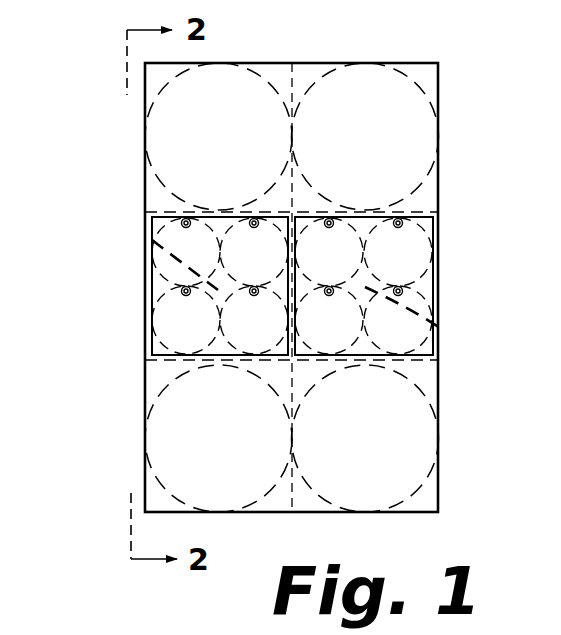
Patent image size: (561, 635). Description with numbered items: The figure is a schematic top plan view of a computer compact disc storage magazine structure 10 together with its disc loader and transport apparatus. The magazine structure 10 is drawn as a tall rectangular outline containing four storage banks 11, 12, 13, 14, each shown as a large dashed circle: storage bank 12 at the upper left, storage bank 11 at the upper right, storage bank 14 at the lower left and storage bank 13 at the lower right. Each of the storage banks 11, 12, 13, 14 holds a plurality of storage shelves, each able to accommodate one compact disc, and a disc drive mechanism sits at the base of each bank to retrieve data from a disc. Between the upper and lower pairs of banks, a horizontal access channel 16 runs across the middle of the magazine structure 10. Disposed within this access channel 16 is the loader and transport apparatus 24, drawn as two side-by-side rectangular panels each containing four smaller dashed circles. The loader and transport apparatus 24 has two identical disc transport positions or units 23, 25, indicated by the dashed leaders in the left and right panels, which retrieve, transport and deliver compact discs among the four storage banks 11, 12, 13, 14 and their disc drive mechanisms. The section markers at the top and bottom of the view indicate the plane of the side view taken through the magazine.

The disc storage magazine structure 10 is at (112, 145).
The storage bank 11 is at (373, 145).
The storage bank 12 is at (228, 145).
The storage bank 13 is at (373, 447).
The storage bank 14 is at (228, 447).
The access channel 16 is at (145, 297).
The disc transport unit 23 is at (143, 237).
The loader and transport apparatus 24 is at (136, 307).
The disc transport unit 25 is at (444, 329).